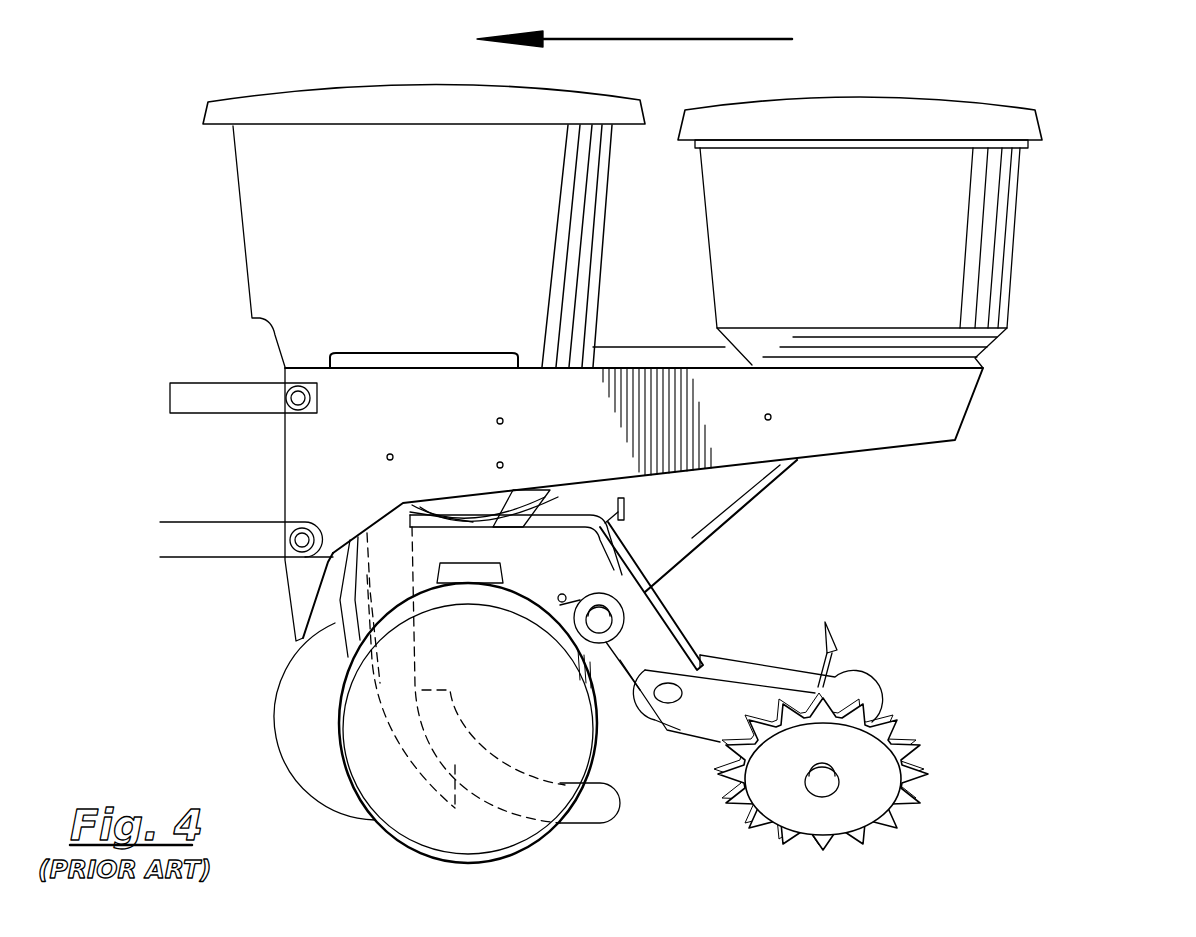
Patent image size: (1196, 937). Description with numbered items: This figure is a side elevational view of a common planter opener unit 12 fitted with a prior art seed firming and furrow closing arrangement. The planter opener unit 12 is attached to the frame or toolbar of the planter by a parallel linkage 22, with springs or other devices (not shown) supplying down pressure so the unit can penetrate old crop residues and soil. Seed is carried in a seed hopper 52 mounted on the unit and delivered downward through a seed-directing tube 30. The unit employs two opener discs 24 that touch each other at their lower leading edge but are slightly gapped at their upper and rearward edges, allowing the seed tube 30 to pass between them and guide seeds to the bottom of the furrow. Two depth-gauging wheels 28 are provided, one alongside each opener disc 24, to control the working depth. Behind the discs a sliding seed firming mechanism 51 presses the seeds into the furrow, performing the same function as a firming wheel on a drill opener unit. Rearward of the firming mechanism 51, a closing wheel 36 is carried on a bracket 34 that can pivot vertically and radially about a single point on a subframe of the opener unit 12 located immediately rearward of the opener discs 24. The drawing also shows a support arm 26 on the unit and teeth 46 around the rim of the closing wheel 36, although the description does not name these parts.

The planter opener unit 12 is at (1080, 70).
The seed hopper 52 is at (285, 257).
The parallel linkage 22 is at (168, 402).
The seed-directing tube 30 is at (387, 577).
The opener discs 24 is at (272, 744).
The depth-gauging wheels 28 is at (415, 822).
The sliding seed firming mechanism 51 is at (607, 800).
The support arm 26 is at (605, 560).
The bracket 34 is at (767, 645).
The closing wheel 36 is at (788, 803).
The teeth 46 is at (905, 805).